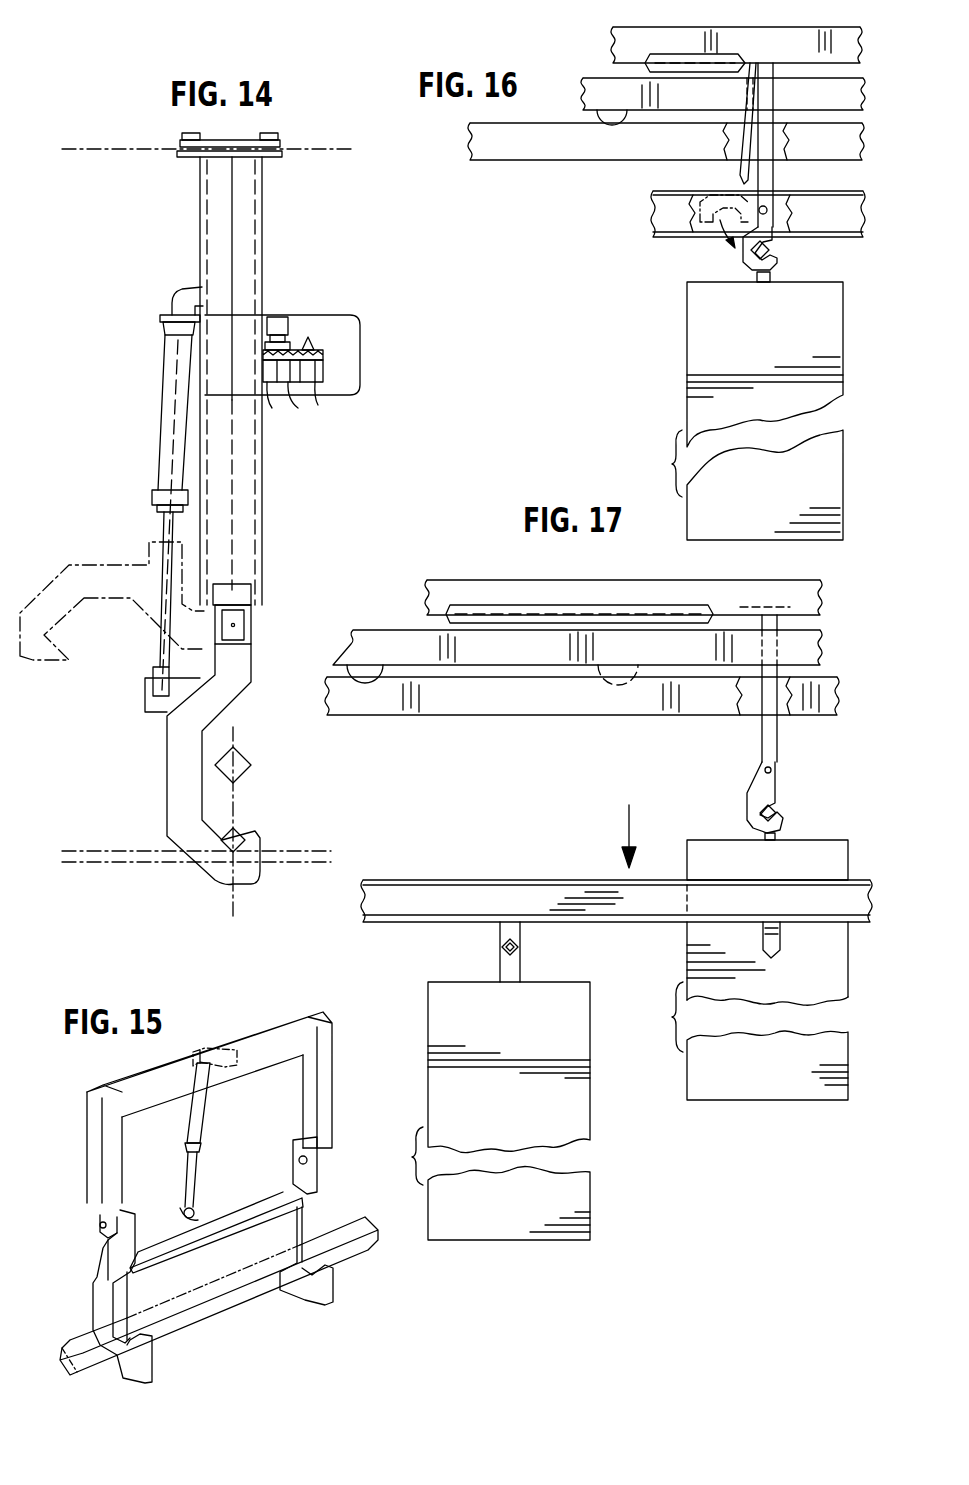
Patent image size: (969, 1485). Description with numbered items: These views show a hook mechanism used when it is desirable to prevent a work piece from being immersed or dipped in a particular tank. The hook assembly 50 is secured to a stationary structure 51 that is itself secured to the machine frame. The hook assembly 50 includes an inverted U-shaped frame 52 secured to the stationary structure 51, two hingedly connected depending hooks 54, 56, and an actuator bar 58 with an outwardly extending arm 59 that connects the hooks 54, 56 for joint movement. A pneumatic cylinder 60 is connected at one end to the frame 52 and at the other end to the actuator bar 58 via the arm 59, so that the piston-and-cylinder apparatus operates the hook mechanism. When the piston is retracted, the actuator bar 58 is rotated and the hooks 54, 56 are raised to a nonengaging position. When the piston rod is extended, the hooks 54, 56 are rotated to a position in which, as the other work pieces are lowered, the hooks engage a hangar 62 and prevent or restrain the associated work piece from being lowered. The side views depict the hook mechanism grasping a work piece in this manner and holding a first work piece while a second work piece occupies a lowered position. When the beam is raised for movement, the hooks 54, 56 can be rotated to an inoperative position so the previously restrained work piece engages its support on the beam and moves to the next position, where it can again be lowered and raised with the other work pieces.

In FIG. 16, the stationary structure 51 is at (627, 32).
In FIG. 17, the stationary structure 51 is at (560, 585).
In FIG. 15, the hook assembly 50 is at (71, 1134).
In FIG. 15, the inverted U-shaped frame 52 is at (250, 1033).
In FIG. 15, the depending hook 54 is at (98, 1293).
In FIG. 15, the depending hook 56 is at (300, 1230).
In FIG. 15, the actuator bar 58 is at (218, 1237).
In FIG. 15, the arm 59 is at (213, 1203).
In FIG. 15, the pneumatic cylinder 60 is at (207, 1113).
In FIG. 15, the hangar 62 is at (377, 1238).